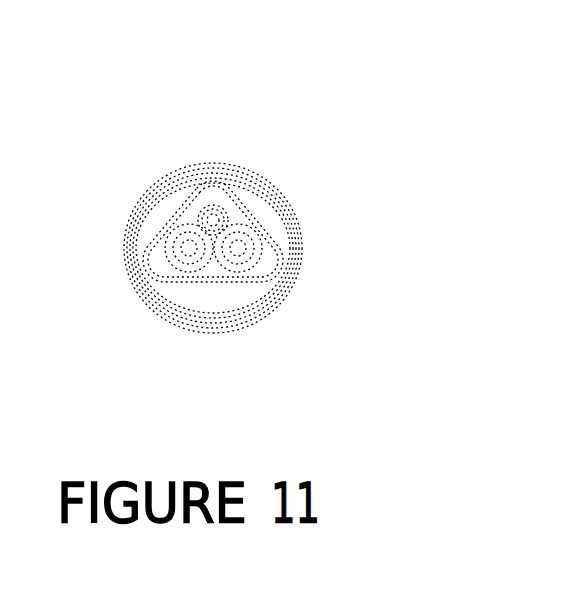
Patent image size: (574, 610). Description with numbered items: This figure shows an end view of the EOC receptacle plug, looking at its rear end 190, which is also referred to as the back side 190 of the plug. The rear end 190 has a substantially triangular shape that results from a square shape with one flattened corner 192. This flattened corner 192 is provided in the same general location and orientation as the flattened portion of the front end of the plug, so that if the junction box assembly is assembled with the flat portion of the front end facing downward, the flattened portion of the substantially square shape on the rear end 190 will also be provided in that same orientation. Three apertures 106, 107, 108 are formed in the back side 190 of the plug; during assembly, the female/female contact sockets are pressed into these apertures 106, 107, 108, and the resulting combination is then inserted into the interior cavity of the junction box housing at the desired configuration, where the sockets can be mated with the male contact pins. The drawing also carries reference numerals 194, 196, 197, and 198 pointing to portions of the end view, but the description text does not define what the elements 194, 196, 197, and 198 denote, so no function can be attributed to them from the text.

The rear end 190 is at (171, 197).
The flattened corner 192 is at (240, 352).
The sheath layer 194 is at (270, 261).
The inner jacket 196 is at (247, 214).
The outer jacket 197 is at (186, 198).
The filler 198 is at (160, 270).
The aperture 106 is at (213, 216).
The aperture 107 is at (189, 251).
The aperture 108 is at (250, 233).